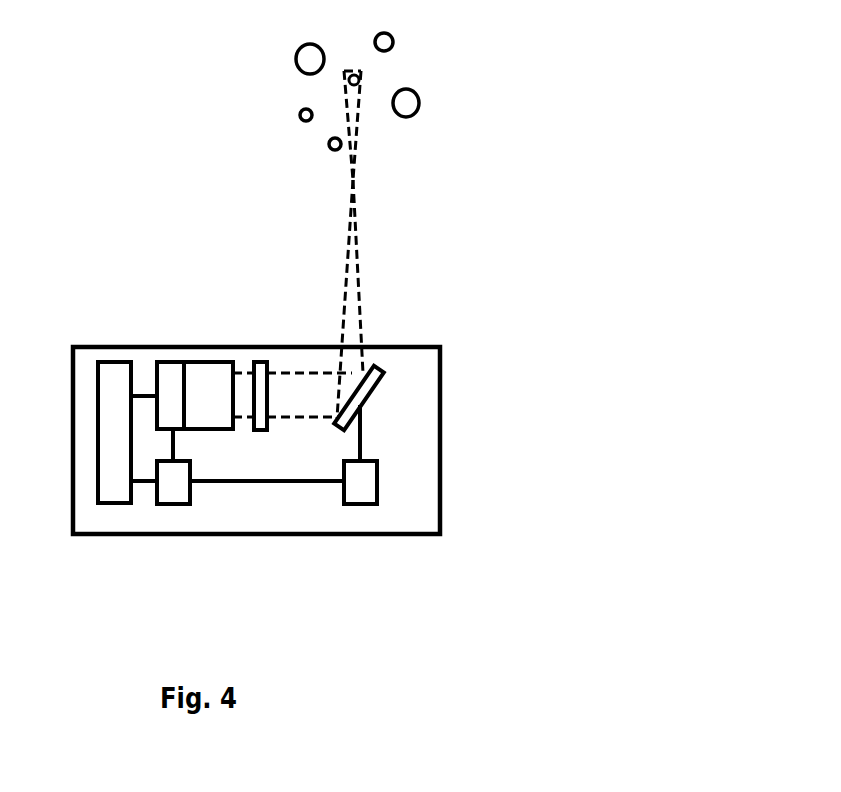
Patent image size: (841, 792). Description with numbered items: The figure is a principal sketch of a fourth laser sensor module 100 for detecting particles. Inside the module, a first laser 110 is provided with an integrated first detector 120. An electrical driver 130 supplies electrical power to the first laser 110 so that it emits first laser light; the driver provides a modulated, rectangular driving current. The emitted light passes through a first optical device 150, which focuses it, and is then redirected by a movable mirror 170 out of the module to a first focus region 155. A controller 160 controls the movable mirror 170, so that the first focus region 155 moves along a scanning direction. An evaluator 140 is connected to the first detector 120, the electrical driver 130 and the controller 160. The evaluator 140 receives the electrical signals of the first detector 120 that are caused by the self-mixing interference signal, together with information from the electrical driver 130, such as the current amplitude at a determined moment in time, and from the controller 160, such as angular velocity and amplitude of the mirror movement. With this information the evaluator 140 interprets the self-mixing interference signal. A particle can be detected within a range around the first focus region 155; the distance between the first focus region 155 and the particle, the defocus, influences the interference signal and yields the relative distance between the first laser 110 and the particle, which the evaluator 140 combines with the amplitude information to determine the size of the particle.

The fourth laser sensor module 100 is at (97, 347).
The first laser 110 is at (202, 360).
The first detector 120 is at (172, 360).
The electrical driver 130 is at (97, 442).
The evaluator 140 is at (173, 505).
The first optical device 150 is at (263, 360).
The first focus region 155 is at (354, 176).
The controller 160 is at (370, 505).
The movable mirror 170 is at (383, 390).